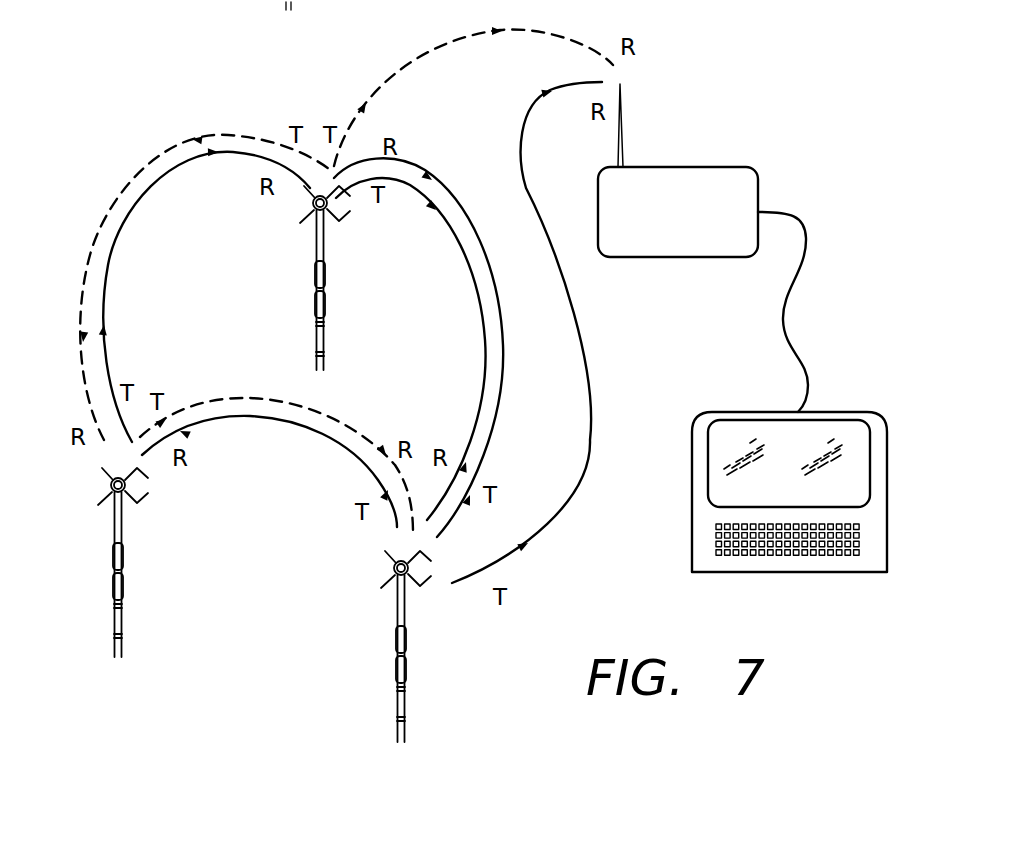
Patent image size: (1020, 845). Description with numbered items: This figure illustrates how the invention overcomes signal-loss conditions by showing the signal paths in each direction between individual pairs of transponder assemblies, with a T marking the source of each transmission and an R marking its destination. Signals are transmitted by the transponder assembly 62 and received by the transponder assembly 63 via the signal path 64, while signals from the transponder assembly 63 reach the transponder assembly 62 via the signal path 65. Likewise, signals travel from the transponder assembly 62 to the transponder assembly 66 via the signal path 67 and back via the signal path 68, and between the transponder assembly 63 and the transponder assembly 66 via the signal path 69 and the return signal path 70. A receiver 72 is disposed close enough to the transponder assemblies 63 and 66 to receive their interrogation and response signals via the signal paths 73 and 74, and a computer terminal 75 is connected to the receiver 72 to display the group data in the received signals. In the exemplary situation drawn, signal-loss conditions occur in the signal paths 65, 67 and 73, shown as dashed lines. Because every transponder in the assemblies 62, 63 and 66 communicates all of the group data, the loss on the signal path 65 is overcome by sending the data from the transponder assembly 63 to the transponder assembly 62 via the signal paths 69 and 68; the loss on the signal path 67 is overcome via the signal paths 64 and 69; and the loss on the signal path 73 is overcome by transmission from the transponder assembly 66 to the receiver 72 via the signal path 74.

The transponder assembly 62 is at (125, 545).
The transponder assembly 63 is at (310, 262).
The signal path 64 is at (122, 243).
The signal path 65 is at (118, 198).
The transponder assembly 66 is at (407, 660).
The signal path 67 is at (278, 404).
The signal path 68 is at (305, 430).
The signal path 69 is at (484, 338).
The signal path 70 is at (505, 347).
The receiver 72 is at (710, 167).
The signal path 73 is at (430, 58).
The signal path 74 is at (578, 307).
The computer terminal 75 is at (780, 572).